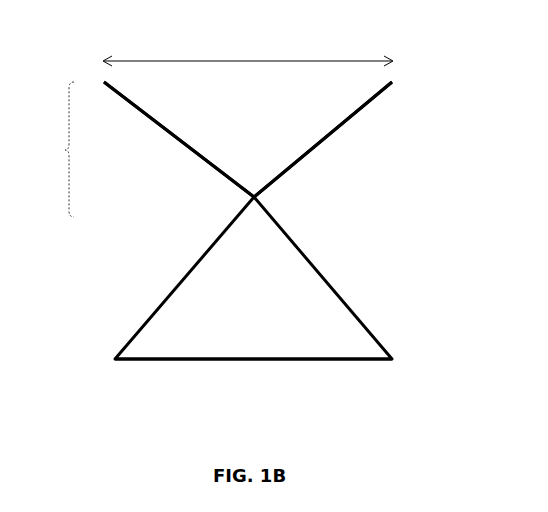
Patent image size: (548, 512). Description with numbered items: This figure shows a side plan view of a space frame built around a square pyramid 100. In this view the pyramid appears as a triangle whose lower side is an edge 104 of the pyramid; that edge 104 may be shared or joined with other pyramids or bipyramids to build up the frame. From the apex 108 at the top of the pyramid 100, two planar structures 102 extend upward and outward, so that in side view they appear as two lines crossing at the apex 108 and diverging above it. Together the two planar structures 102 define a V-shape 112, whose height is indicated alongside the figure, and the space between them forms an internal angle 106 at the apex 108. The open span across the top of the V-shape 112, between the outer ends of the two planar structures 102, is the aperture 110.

The square pyramid 100 is at (327, 278).
The planar structures 102 is at (168, 135).
The edge 104 is at (217, 362).
The internal angle 106 is at (285, 170).
The apex 108 is at (243, 198).
The aperture 110 is at (248, 49).
The V-shape 112 is at (49, 149).